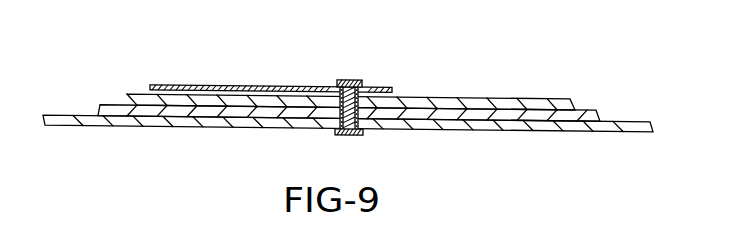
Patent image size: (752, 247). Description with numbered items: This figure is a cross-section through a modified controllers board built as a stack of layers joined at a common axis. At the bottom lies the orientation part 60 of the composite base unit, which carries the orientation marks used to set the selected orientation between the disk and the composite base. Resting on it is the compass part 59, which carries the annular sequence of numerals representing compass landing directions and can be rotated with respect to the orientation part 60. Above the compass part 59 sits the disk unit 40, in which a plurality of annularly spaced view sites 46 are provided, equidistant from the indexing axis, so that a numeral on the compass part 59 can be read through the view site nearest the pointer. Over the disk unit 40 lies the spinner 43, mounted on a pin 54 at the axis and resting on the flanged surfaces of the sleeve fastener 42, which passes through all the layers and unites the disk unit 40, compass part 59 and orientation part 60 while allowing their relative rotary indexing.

The orientation part 60 is at (640, 123).
The compass part 59 is at (113, 108).
The disk unit 40 is at (552, 98).
The view sites 46 is at (519, 98).
The spinner 43 is at (246, 86).
The pin 54 is at (349, 80).
The sleeve fastener 42 is at (337, 127).